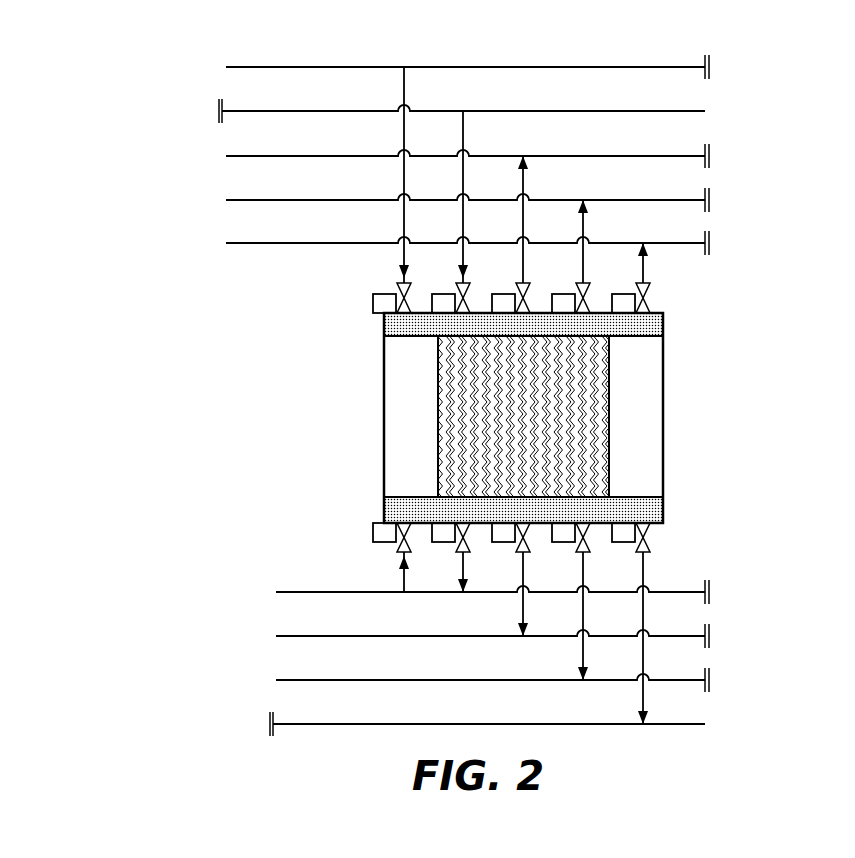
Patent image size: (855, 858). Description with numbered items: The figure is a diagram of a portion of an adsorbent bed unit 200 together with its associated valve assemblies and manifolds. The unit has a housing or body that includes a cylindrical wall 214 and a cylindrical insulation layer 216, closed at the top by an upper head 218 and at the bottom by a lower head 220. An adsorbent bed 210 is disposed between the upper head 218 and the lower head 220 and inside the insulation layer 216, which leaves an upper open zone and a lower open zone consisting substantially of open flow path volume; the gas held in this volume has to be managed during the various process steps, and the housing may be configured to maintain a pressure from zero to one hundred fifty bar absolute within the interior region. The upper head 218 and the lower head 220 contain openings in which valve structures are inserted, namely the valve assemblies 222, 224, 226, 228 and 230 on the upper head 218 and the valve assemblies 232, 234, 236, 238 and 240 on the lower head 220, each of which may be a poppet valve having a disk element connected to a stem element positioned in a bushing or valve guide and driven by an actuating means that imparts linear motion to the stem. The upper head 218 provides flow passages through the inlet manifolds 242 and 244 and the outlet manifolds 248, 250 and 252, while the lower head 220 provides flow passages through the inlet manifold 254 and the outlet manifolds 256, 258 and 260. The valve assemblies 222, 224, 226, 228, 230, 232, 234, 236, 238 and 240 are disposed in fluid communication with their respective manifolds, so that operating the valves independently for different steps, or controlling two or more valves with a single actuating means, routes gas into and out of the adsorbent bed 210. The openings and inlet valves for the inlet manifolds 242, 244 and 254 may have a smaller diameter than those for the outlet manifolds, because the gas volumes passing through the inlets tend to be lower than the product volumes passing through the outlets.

The adsorbent bed unit 200 is at (198, 28).
The adsorbent bed 210 is at (453, 420).
The cylindrical wall 214 is at (664, 428).
The cylindrical insulation layer 216 is at (398, 382).
The upper head 218 is at (664, 323).
The lower head 220 is at (665, 510).
The valve assembly 222 is at (434, 281).
The valve assembly 224 is at (494, 281).
The valve assembly 226 is at (554, 281).
The valve assembly 228 is at (614, 281).
The valve assembly 230 is at (674, 281).
The valve assembly 232 is at (412, 548).
The valve assembly 234 is at (471, 548).
The valve assembly 236 is at (531, 548).
The valve assembly 238 is at (591, 548).
The valve assembly 240 is at (651, 548).
The inlet manifold 242 is at (322, 66).
The inlet manifold 244 is at (322, 110).
The outlet manifold 248 is at (322, 155).
The outlet manifold 250 is at (322, 199).
The outlet manifold 252 is at (322, 242).
The inlet manifold 254 is at (358, 591).
The outlet manifold 256 is at (358, 635).
The outlet manifold 258 is at (358, 679).
The outlet manifold 260 is at (358, 723).